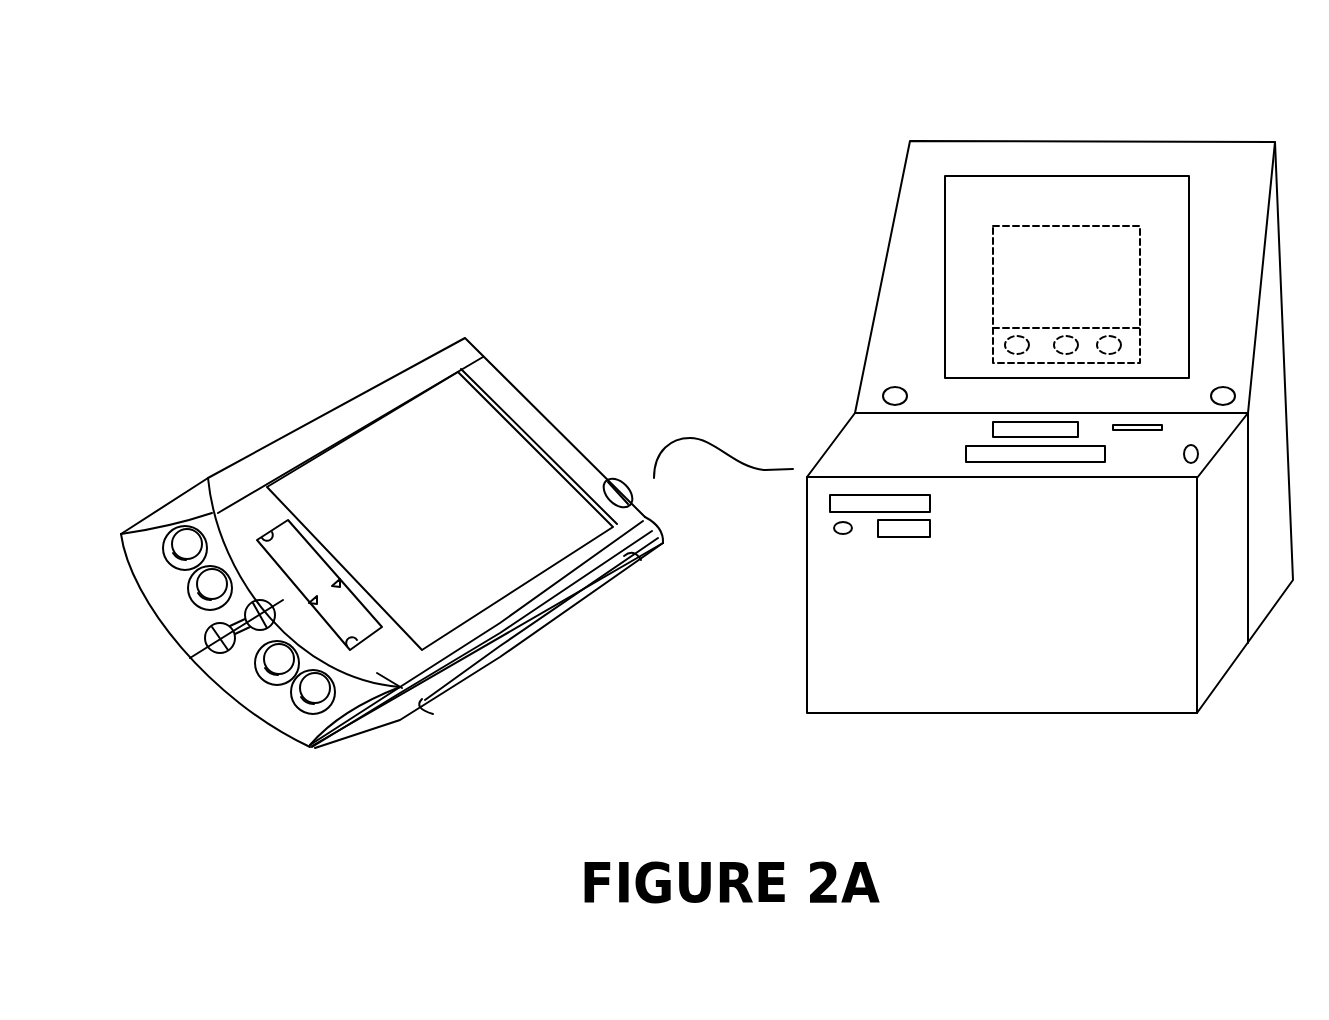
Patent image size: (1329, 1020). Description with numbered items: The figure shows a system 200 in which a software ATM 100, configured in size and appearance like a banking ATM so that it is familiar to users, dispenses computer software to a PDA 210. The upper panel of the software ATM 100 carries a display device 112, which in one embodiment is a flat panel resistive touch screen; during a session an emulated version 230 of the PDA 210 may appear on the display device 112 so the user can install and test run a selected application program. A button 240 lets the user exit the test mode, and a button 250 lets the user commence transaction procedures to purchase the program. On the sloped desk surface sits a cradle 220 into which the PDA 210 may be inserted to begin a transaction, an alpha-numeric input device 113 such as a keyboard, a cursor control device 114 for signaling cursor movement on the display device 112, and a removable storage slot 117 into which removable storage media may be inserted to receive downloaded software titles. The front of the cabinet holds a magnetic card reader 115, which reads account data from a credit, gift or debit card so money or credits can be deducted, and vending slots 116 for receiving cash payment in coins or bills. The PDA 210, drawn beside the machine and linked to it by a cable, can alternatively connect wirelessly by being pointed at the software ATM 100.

The system 200 is at (175, 66).
The software ATM 100 is at (928, 114).
The display device 112 is at (1087, 213).
The emulated version of PDA 230 is at (1092, 294).
The button 240 is at (908, 396).
The button 250 is at (1211, 396).
The cradle 220 is at (993, 428).
The removable storage slot 117 is at (1164, 428).
The alpha-numeric input device 113 is at (966, 453).
The cursor control device 114 is at (1183, 455).
The magnetic card reader 115 is at (930, 503).
The vending slots 116 is at (930, 528).
The PDA 210 is at (423, 503).